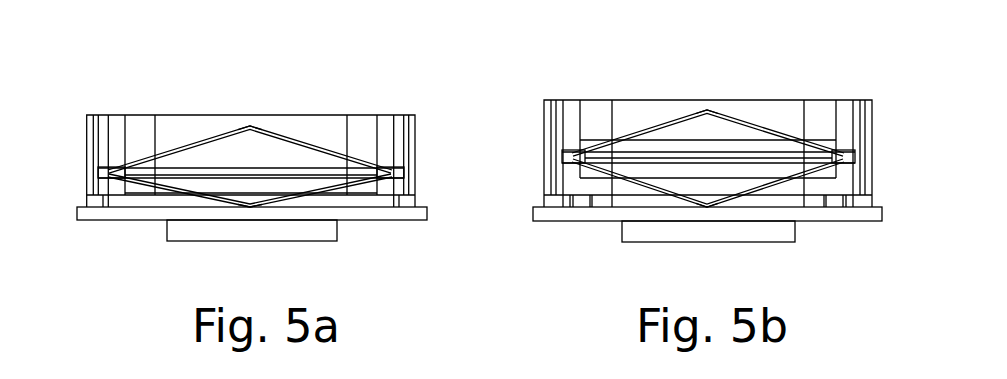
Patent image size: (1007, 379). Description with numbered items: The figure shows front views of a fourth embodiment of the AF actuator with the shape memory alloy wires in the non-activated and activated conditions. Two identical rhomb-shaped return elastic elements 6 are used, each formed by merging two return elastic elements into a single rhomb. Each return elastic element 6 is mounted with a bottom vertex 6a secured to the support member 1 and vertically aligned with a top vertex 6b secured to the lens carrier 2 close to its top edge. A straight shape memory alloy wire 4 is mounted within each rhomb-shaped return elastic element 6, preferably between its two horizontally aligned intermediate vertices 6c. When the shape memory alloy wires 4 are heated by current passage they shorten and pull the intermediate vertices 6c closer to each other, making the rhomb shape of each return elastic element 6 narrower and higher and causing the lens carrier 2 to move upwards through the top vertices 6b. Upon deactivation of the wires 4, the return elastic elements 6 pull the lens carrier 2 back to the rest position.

In FIG. 5a, the support member 1 is at (192, 228).
In FIG. 5b, the support member 1 is at (768, 230).
In FIG. 5a, the lens carrier 2 is at (138, 132).
In FIG. 5b, the lens carrier 2 is at (822, 117).
In FIG. 5a, the shape memory alloy wire 4 is at (338, 175).
In FIG. 5b, the shape memory alloy wire 4 is at (690, 157).
In FIG. 5a, the rhomb-shaped return elastic element 6 is at (303, 142).
In FIG. 5b, the rhomb-shaped return elastic element 6 is at (810, 178).
In FIG. 5a, the bottom vertex 6a is at (252, 207).
In FIG. 5b, the bottom vertex 6a is at (707, 208).
In FIG. 5a, the top vertex 6b is at (252, 128).
In FIG. 5b, the top vertex 6b is at (705, 108).
In FIG. 5a, the intermediate vertex 6c is at (400, 170).
In FIG. 5b, the intermediate vertex 6c is at (502, 67).